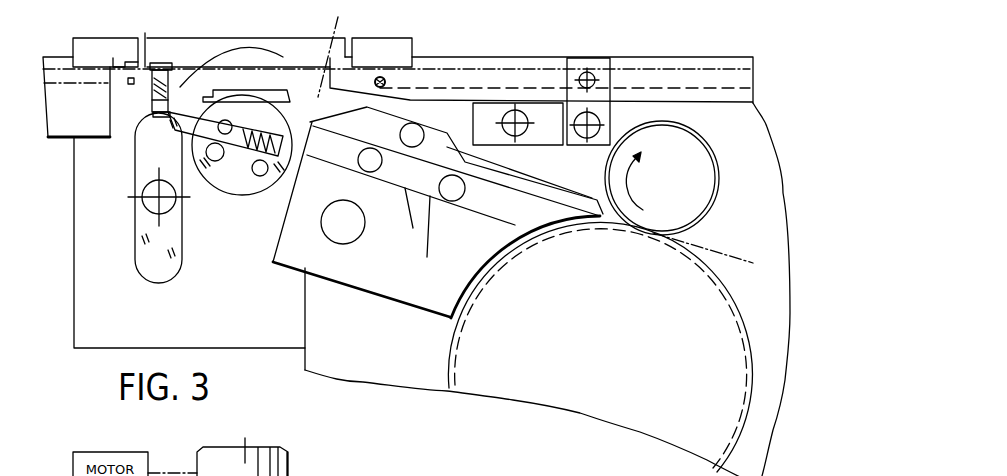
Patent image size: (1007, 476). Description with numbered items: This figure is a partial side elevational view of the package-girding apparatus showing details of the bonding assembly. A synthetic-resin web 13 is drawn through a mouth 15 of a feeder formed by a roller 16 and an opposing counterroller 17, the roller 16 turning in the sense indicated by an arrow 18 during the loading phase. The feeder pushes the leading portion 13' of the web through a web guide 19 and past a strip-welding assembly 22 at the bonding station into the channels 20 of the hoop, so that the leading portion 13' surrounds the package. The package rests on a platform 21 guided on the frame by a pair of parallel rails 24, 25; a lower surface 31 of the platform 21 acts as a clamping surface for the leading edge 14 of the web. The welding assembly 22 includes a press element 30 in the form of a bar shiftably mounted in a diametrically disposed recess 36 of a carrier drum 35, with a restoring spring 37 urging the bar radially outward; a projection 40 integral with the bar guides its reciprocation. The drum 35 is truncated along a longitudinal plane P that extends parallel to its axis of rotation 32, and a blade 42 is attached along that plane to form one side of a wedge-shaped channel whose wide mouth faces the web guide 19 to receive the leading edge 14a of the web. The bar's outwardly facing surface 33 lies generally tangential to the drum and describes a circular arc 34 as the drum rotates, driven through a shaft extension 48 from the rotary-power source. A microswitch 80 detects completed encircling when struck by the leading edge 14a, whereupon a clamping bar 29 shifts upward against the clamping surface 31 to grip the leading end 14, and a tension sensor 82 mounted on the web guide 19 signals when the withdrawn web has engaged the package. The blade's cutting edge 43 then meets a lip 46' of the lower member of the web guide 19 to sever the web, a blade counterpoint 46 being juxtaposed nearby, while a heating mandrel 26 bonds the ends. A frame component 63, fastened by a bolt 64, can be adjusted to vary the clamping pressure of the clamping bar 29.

The synthetic-resin strip or web 13 is at (703, 235).
The leading portion of web 13' is at (396, 42).
The leading edge of web portion 14 is at (145, 33).
The leading edge of web 14a is at (115, 62).
The mouth of feeder 15 is at (600, 385).
The roller 16 is at (698, 172).
The counterroller 17 is at (473, 333).
The arrow 18 is at (627, 180).
The web guide 19 is at (503, 180).
The channels 20 is at (635, 58).
The platform 21 is at (317, 57).
The strip-welding assembly 22 is at (210, 250).
The bar or rail 24 is at (80, 50).
The bar or rail 25 is at (402, 43).
The heating mandrel 26 is at (380, 77).
The clamping bar 29 is at (157, 65).
The press element 30 is at (177, 127).
The lower surface 31 is at (293, 67).
The axis of rotation 32 is at (236, 193).
The outwardly facing surface 33 is at (150, 98).
The circular arc 34 is at (205, 60).
The carrier drum 35 is at (282, 168).
The recess 36 is at (229, 182).
The restoring spring 37 is at (254, 190).
The projection 40 is at (222, 180).
The blade 42 is at (233, 95).
The cutting edge 43 is at (257, 110).
The blade counterpoint 46 is at (456, 161).
The lip or edge of web guide 46' is at (411, 186).
The shaft extension 48 is at (293, 465).
The frame component 63 is at (152, 228).
The bolt 64 is at (147, 192).
The microswitch 80 is at (128, 82).
The tension sensor 82 is at (413, 228).
The longitudinal plane P is at (333, 50).